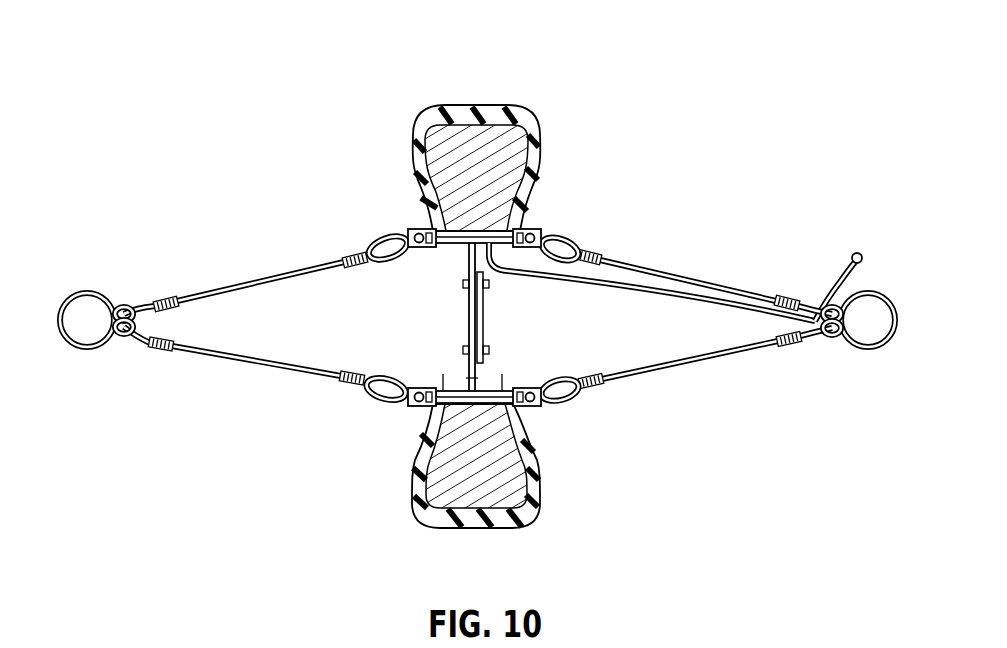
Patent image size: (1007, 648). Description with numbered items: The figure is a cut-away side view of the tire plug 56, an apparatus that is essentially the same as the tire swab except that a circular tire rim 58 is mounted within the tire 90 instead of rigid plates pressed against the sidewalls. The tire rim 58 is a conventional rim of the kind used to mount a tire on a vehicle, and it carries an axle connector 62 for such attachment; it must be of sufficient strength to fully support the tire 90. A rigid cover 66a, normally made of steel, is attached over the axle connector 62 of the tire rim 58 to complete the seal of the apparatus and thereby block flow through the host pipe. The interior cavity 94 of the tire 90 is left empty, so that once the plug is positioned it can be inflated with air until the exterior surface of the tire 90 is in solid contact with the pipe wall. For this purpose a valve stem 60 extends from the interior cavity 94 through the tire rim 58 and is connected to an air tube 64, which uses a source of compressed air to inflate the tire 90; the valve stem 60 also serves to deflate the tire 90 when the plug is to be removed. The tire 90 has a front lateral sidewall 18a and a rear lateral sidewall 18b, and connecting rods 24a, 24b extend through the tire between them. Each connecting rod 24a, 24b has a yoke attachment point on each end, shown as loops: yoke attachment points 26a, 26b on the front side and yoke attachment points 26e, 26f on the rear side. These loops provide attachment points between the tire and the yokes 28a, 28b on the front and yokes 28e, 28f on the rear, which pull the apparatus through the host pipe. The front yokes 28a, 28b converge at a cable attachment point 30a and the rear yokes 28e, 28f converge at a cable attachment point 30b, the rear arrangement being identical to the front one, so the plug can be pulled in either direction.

The tire plug 56 is at (315, 78).
The tire 90 is at (480, 176).
The interior cavity 94 is at (467, 131).
The front lateral sidewall 18a is at (421, 497).
The rear lateral sidewall 18b is at (470, 450).
The connecting rod 24a is at (509, 411).
The connecting rod 24b is at (516, 198).
The yoke attachment point 26a is at (369, 420).
The yoke attachment point 26b is at (410, 230).
The yoke attachment point 26e is at (574, 371).
The yoke attachment point 26f is at (581, 227).
The yoke 28a is at (240, 375).
The yoke 28b is at (241, 270).
The yoke 28e is at (709, 380).
The yoke 28f is at (708, 272).
The cable attachment point 30a is at (84, 357).
The cable attachment point 30b is at (891, 352).
The tire rim 58 is at (467, 377).
The valve stem 60 is at (652, 282).
The axle connector 62 is at (467, 312).
The air tube 64 is at (829, 265).
The rigid cover 66a is at (512, 317).